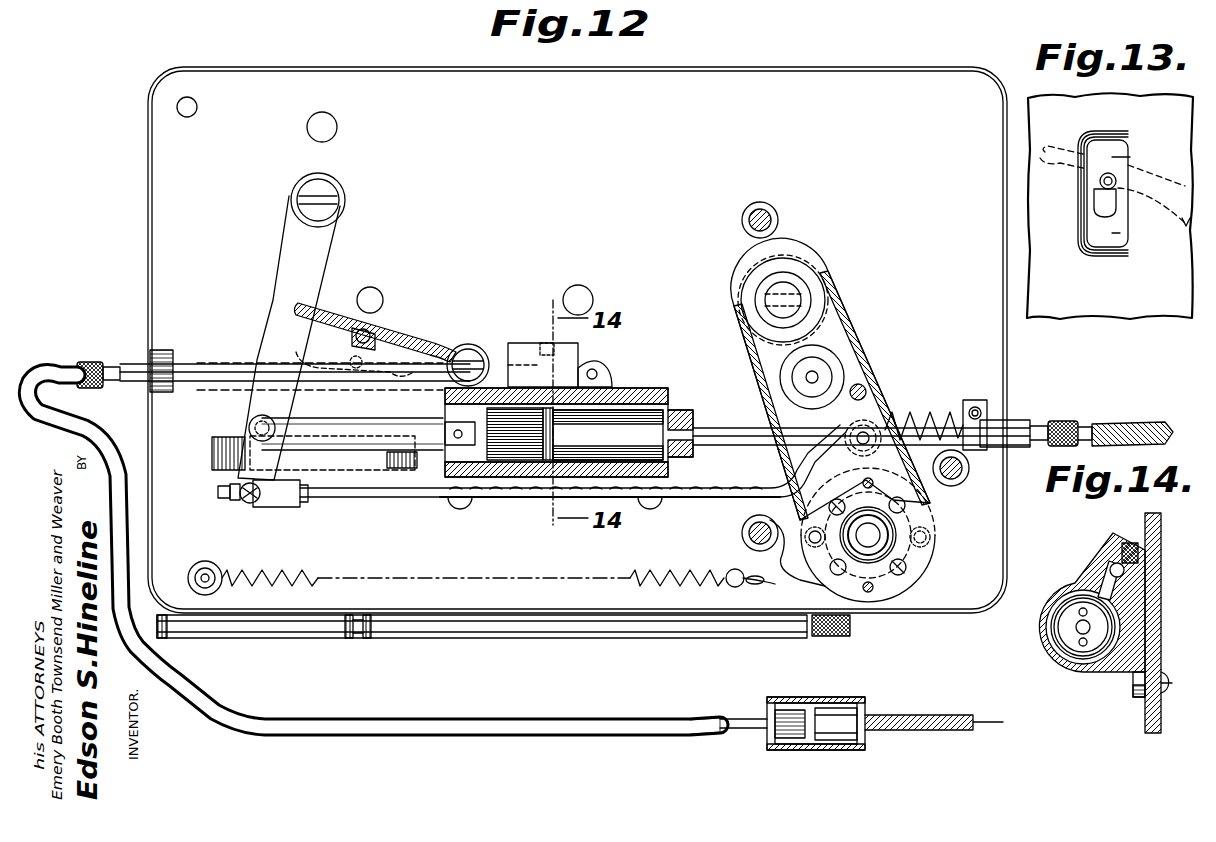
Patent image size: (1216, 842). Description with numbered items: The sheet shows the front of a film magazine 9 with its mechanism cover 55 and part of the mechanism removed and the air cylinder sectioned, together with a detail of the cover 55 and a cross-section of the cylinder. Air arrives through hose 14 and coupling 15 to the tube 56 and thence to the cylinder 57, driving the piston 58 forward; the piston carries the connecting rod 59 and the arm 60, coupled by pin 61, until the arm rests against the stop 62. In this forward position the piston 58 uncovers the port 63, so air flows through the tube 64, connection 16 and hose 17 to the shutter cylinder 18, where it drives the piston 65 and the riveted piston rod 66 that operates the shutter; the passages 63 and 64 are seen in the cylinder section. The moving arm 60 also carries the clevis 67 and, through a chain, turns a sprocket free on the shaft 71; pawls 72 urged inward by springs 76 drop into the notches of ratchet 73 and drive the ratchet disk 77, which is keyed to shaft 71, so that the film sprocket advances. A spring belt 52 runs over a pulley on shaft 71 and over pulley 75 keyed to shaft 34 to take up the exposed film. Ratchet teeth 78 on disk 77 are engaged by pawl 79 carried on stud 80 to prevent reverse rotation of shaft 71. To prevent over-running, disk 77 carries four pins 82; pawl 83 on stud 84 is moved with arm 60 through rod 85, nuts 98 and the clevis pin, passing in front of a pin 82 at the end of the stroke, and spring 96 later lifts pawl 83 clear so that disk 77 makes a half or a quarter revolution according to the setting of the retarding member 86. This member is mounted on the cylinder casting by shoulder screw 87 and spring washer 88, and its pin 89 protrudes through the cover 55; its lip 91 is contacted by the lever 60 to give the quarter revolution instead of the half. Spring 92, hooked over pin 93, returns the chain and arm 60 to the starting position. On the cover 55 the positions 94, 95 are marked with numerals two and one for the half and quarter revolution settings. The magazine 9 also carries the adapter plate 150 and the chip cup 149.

In FIG. 12, the magazine 9 is at (816, 80).
In FIG. 14, the magazine 9 is at (1162, 643).
In FIG. 12, the hose 14 is at (1123, 422).
In FIG. 12, the coupling 15 is at (1060, 420).
In FIG. 12, the connection 16 is at (84, 362).
In FIG. 12, the hose 17 is at (500, 735).
In FIG. 12, the shutter cylinder 18 is at (828, 700).
In FIG. 12, the shaft 34 is at (792, 290).
In FIG. 12, the spring belt 52 is at (852, 342).
In FIG. 13, the cover 55 is at (1156, 304).
In FIG. 12, the tube 56 is at (1015, 420).
In FIG. 12, the cylinder 57 is at (635, 390).
In FIG. 14, the cylinder 57 is at (1105, 672).
In FIG. 12, the piston 58 is at (517, 470).
In FIG. 14, the piston 58 is at (1068, 642).
In FIG. 12, the connecting rod 59 is at (345, 424).
In FIG. 12, the arm 60 is at (325, 250).
In FIG. 12, the pin 61 is at (250, 420).
In FIG. 12, the stop 62 is at (220, 472).
In FIG. 12, the port 63 is at (572, 360).
In FIG. 14, the port 63 is at (1112, 584).
In FIG. 12, the tube 64 is at (120, 366).
In FIG. 14, the tube 64 is at (1125, 570).
In FIG. 12, the piston 65 is at (250, 505).
In FIG. 12, the piston rod 66 is at (330, 210).
In FIG. 12, the clevis 67 is at (278, 508).
In FIG. 12, the shaft 71 is at (845, 492).
In FIG. 12, the pawls 72 is at (935, 548).
In FIG. 12, the ratchet 73 is at (828, 580).
In FIG. 12, the pulley 75 is at (818, 312).
In FIG. 12, the springs 76 is at (875, 600).
In FIG. 12, the ratchet disk 77 is at (905, 600).
In FIG. 12, the ratchet teeth 78 is at (810, 580).
In FIG. 12, the pawl 79 is at (750, 562).
In FIG. 12, the stud 80 is at (779, 220).
In FIG. 12, the pins 82 is at (920, 520).
In FIG. 12, the pawl 83 is at (870, 396).
In FIG. 12, the stud 84 is at (835, 375).
In FIG. 12, the rod 85 is at (330, 498).
In FIG. 12, the retarding member 86 is at (405, 345).
In FIG. 13, the retarding member 86 is at (1143, 180).
In FIG. 12, the shoulder screw 87 is at (470, 348).
In FIG. 12, the spring washer 88 is at (486, 352).
In FIG. 12, the pin 89 is at (370, 334).
In FIG. 13, the pin 89 is at (1098, 184).
In FIG. 12, the lip 91 is at (348, 341).
In FIG. 12, the spring 92 is at (562, 574).
In FIG. 12, the pin 93 is at (205, 568).
In FIG. 13, the indicating position 94 is at (1131, 150).
In FIG. 13, the indicating position 95 is at (1112, 233).
In FIG. 12, the spring 96 is at (925, 408).
In FIG. 12, the nuts 98 is at (230, 500).
In FIG. 12, the cup 149 is at (836, 636).
In FIG. 12, the adapter plate 150 is at (283, 630).